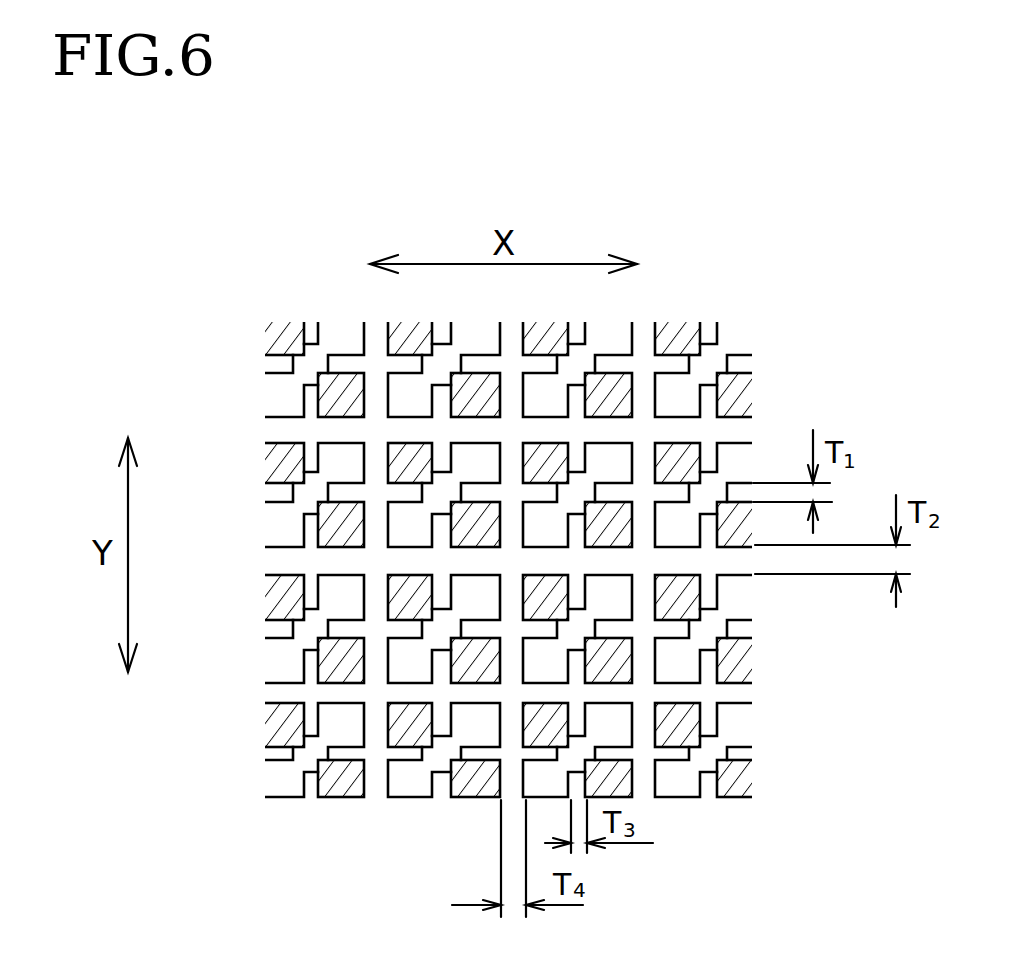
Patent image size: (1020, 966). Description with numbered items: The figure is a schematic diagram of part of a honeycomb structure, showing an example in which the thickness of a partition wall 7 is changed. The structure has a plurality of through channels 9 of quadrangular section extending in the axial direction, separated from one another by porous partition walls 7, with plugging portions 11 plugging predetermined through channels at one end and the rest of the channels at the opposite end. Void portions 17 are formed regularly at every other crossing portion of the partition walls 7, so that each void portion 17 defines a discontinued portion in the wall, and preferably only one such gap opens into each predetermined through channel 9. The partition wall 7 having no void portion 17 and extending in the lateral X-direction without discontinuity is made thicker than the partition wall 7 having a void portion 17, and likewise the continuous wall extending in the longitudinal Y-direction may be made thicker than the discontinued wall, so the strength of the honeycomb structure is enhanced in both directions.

The through channel 9 is at (473, 460).
The void portion in crossing portion 17 is at (437, 497).
The partition wall 7 is at (398, 557).
The plugging portion 11 is at (475, 540).